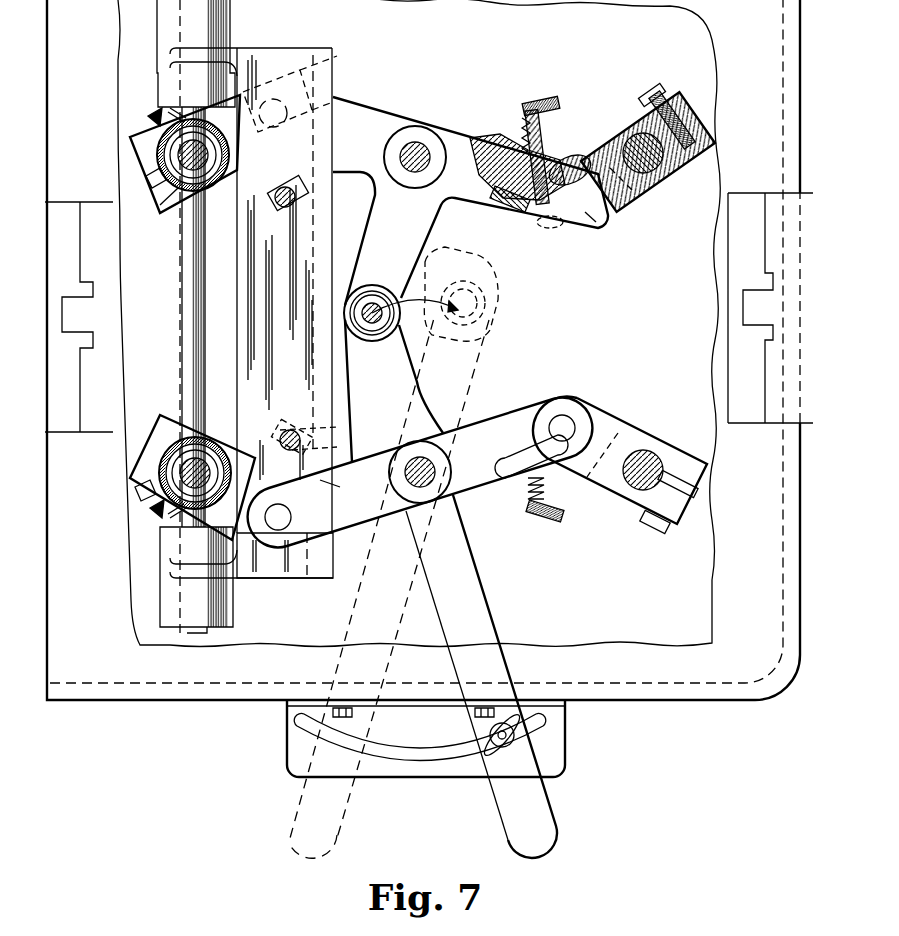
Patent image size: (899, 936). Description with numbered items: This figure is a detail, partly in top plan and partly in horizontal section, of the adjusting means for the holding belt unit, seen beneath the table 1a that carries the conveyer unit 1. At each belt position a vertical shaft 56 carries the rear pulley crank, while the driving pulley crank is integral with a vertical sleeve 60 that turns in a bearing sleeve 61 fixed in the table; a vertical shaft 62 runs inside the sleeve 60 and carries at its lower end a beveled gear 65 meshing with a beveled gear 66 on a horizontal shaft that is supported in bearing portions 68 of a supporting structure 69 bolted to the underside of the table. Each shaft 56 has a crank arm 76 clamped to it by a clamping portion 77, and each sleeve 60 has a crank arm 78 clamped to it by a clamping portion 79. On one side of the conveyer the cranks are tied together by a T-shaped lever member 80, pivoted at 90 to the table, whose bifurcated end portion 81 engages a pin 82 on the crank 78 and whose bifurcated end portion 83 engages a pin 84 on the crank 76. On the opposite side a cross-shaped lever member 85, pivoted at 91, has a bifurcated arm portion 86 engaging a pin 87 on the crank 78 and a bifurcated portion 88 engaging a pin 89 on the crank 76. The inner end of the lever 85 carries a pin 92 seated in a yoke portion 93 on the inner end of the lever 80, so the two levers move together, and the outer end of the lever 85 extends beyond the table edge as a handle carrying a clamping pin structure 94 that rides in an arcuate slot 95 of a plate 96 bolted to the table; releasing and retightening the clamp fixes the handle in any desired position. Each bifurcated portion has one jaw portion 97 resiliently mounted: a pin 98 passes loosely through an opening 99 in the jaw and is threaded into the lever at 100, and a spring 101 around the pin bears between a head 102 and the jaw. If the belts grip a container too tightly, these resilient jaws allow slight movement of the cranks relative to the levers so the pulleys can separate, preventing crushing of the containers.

The conveyer unit 1 is at (737, 200).
The table 1a is at (687, 690).
The vertical shaft 56 is at (655, 180).
The vertical sleeve 60 is at (150, 148).
The bearing sleeve 61 is at (155, 168).
The vertical shaft 62 is at (175, 155).
The beveled gear 65 is at (160, 118).
The beveled gear 66 is at (176, 112).
The bearing portions 68 is at (215, 21).
The supporting structure 69 is at (258, 258).
The crank arm 76 is at (630, 192).
The clamping portion 77 is at (676, 122).
The crank arm 78 is at (232, 190).
The clamping portion 79 is at (160, 200).
The T-shaped lever member 80 is at (371, 122).
The bifurcated end portion 81 is at (277, 96).
The pin 82 is at (292, 96).
The bifurcated end portion 83 is at (548, 228).
The pin 84 is at (588, 218).
The cross-shaped lever member 85 is at (450, 536).
The bifurcated arm portion 86 is at (303, 548).
The pin 87 is at (265, 517).
The bifurcated portion 88 is at (530, 410).
The pin 89 is at (562, 415).
The pivot 90 is at (418, 143).
The pivot 91 is at (437, 468).
The pin 92 is at (373, 324).
The yoke portion 93 is at (375, 285).
The clamping pin structure 94 is at (516, 736).
The arcuate slot 95 is at (430, 752).
The plate 96 is at (388, 766).
The jaw portion 97 is at (570, 158).
The pin 98 is at (543, 125).
The opening 99 is at (480, 147).
The threaded portion 100 is at (524, 203).
The spring 101 is at (522, 136).
The head 102 is at (533, 110).